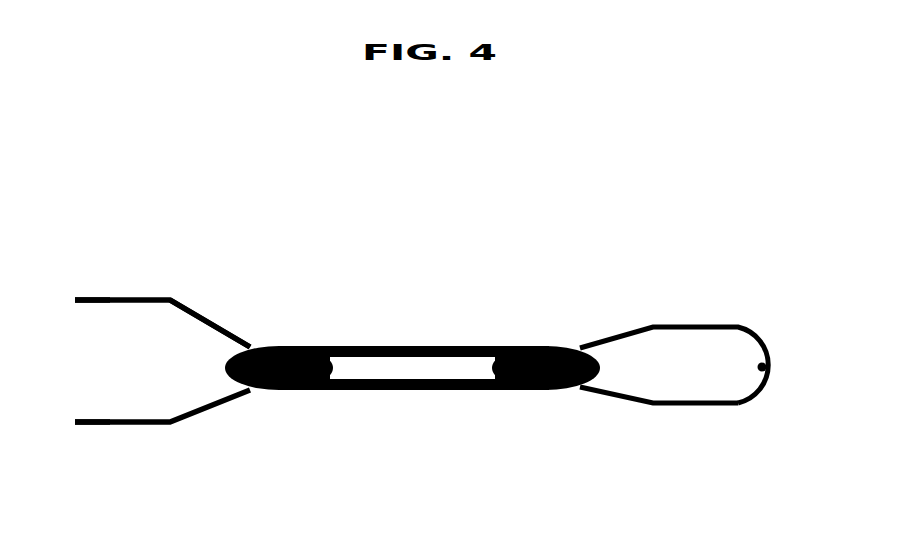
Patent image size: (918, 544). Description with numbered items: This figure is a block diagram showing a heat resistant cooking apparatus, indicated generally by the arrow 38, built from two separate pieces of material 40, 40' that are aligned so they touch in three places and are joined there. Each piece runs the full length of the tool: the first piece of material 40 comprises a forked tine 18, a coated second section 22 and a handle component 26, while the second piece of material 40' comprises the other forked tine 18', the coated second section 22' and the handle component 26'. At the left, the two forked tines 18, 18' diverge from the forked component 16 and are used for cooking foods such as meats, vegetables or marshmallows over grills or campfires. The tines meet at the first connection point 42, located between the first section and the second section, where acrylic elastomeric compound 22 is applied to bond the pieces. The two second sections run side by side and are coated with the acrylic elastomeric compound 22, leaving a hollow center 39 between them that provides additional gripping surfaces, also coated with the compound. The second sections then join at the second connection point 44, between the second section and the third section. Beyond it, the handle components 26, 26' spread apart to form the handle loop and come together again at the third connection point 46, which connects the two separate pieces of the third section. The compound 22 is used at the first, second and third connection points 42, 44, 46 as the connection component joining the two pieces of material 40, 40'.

The electrode assembly 38 is at (632, 156).
The forked tine 18 is at (162, 299).
The forked tine 18' is at (162, 447).
The separate piece of material 40 is at (71, 330).
The separate piece of material 40' is at (70, 453).
The forked component 16 is at (217, 325).
The acrylic elastomeric compound 22 is at (414, 349).
The acrylic elastomeric compound coated second section 22' is at (412, 416).
The hollow center 39 is at (475, 368).
The first connection point 42 is at (280, 345).
The second connection point 44 is at (547, 345).
The handle component 26 is at (674, 343).
The handle component 26' is at (659, 425).
The third connection point 46 is at (766, 358).